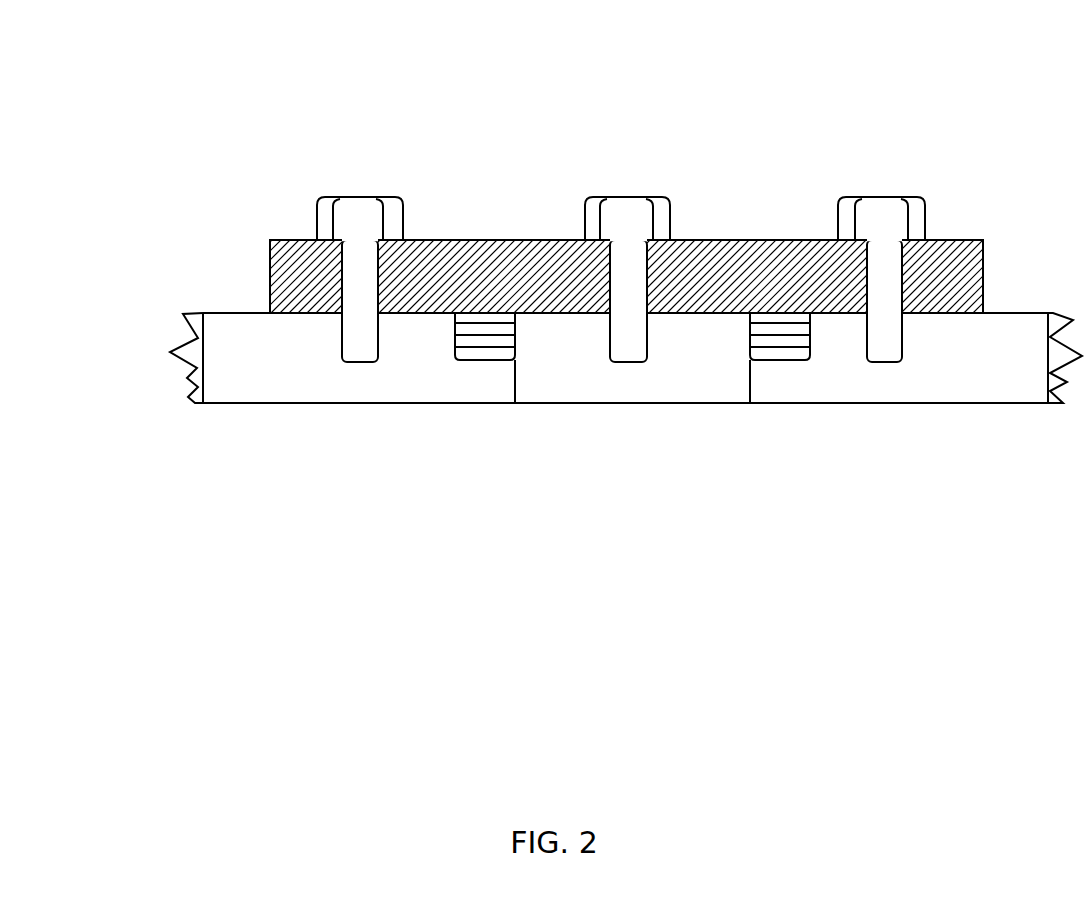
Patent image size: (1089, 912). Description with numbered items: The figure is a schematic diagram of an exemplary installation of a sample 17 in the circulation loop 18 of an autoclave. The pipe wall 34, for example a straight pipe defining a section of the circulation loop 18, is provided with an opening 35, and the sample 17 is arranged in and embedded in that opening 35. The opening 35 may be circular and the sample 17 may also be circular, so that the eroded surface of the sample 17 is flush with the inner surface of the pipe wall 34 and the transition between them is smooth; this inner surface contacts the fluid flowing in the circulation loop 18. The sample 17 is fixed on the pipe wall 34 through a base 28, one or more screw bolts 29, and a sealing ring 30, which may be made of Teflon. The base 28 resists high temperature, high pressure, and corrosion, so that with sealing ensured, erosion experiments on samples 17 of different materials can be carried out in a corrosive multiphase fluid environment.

The sample 17 is at (677, 355).
The circulation loop 18 is at (155, 358).
The base 28 is at (270, 280).
The screw bolts 29 is at (880, 195).
The sealing ring 30 is at (478, 358).
The pipe wall 34 is at (402, 358).
The opening 35 is at (593, 403).